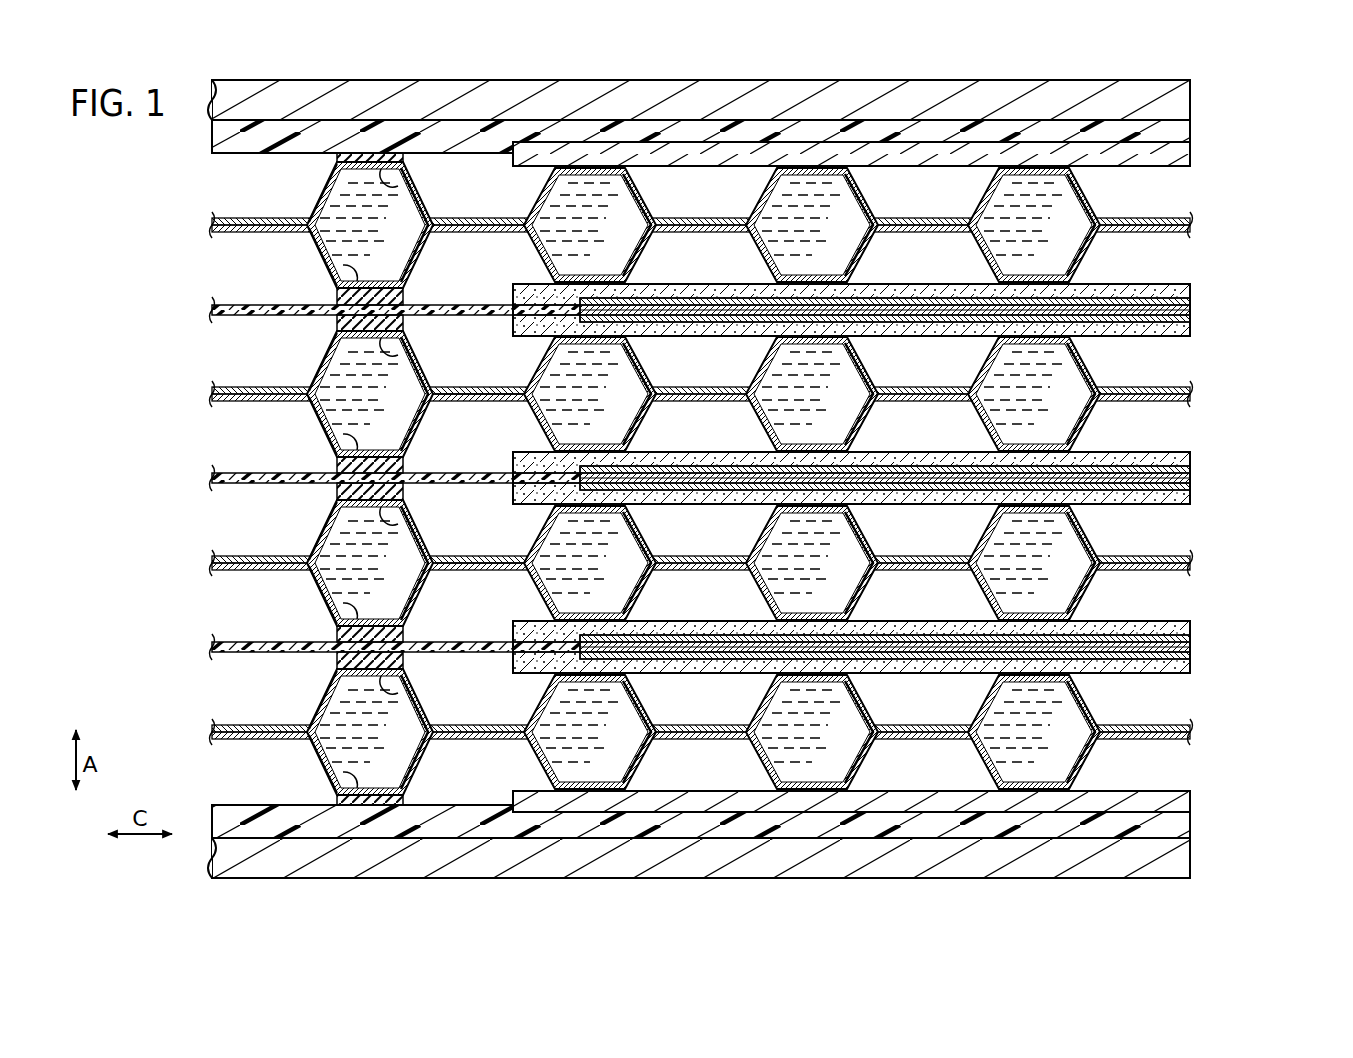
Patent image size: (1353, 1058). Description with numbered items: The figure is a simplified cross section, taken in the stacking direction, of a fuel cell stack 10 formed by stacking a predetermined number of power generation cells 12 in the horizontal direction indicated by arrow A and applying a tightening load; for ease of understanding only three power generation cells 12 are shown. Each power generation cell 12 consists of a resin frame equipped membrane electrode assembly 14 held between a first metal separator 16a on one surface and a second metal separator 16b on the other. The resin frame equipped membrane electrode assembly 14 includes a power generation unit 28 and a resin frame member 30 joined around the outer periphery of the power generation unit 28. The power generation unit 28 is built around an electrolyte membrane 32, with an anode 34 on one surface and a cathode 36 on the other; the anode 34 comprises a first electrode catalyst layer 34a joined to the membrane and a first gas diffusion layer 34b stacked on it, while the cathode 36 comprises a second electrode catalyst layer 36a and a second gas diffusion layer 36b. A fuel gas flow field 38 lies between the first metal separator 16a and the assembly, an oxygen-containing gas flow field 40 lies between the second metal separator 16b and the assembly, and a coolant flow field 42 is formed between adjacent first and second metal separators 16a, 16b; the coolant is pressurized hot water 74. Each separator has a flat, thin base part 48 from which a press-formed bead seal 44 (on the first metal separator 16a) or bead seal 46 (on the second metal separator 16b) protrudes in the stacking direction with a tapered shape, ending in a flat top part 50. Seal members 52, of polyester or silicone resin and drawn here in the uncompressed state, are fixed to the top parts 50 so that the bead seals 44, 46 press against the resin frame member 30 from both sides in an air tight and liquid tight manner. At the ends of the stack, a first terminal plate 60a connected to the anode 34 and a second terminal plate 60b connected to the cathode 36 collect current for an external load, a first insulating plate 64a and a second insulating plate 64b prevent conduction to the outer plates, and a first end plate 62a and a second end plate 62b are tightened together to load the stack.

The fuel cell stack 10 is at (1268, 92).
The power generation cell 12 is at (1271, 402).
The resin frame equipped membrane electrode assembly 14 is at (1197, 481).
The first metal separator 16a is at (1190, 218).
The second metal separator 16b is at (1190, 232).
The power generation unit 28 is at (1266, 265).
The resin frame member 30 is at (262, 318).
The electrolyte membrane 32 is at (1193, 311).
The anode 34 is at (917, 522).
The first electrode catalyst layer 34a is at (1186, 660).
The first gas diffusion layer 34b is at (1186, 666).
The cathode 36 is at (911, 466).
The second electrode catalyst layer 36a is at (1186, 638).
The second gas diffusion layer 36b is at (1186, 626).
The fuel gas flow field 38 is at (920, 527).
The oxygen-containing gas flow field 40 is at (925, 432).
The coolant flow field 42 is at (407, 215).
The bead seal 44 is at (300, 207).
The bead seal 46 is at (300, 243).
The base part 48 is at (512, 403).
The top part 50 is at (403, 185).
The seal member 52 is at (338, 157).
The first terminal plate 60a is at (1175, 808).
The second terminal plate 60b is at (1180, 155).
The first end plate 62a is at (1170, 860).
The second end plate 62b is at (1180, 107).
The first insulating plate 64a is at (1180, 826).
The second insulating plate 64b is at (1180, 131).
The pressurized hot water 74 is at (563, 191).